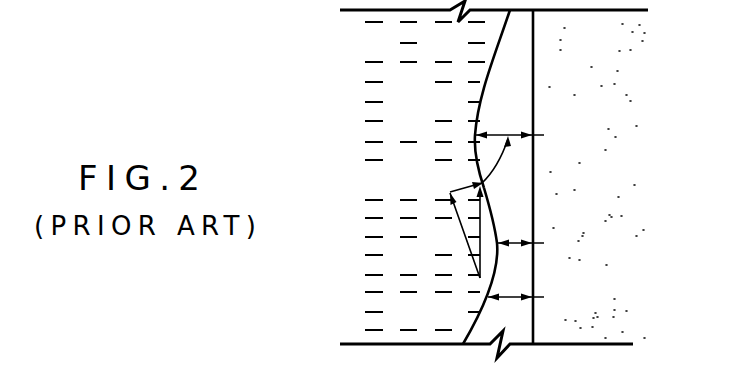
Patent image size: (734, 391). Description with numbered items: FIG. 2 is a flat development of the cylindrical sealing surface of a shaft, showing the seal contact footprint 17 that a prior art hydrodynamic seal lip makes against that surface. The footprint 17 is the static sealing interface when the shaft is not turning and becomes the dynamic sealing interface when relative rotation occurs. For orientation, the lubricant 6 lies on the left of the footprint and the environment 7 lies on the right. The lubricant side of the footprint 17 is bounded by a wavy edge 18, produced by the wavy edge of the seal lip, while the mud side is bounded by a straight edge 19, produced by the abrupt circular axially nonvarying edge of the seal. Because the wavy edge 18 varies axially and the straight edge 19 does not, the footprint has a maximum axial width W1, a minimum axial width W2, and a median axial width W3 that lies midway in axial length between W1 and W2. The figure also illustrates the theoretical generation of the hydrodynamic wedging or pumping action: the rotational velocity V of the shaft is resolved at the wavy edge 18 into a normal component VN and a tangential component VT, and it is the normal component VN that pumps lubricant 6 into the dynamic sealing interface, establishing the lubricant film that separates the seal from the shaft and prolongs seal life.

The lubricant 6 is at (425, 176).
The environment 7 is at (597, 181).
The seal footprint 17 is at (485, 325).
The wavy edge 18 is at (478, 108).
The straight edge 19 is at (534, 88).
The maximum axial width W1 is at (526, 135).
The minimum axial width W2 is at (537, 243).
The median axial width W3 is at (532, 297).
The rotational velocity V is at (494, 207).
The normal component of rotational velocity VN is at (461, 177).
The tangential component of rotational velocity VT is at (458, 235).